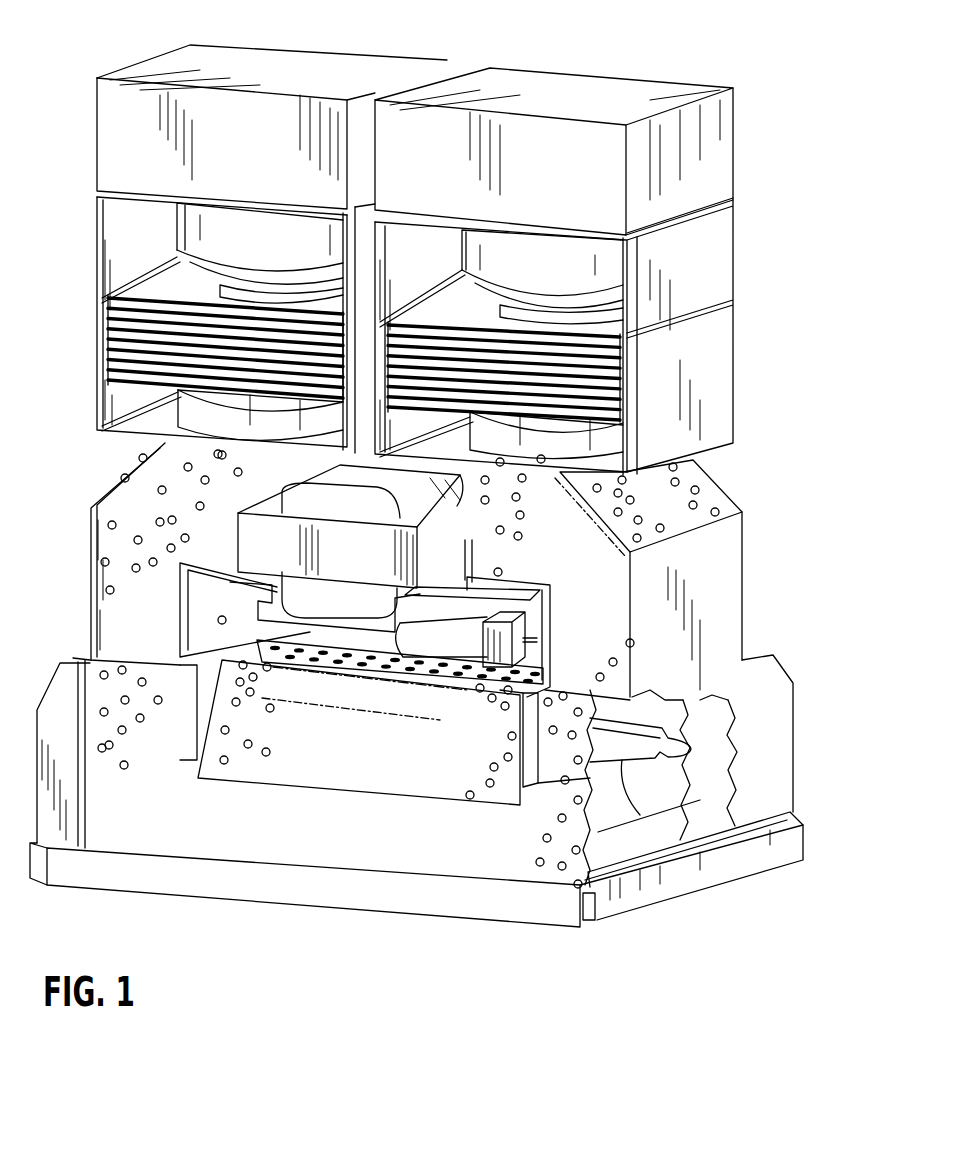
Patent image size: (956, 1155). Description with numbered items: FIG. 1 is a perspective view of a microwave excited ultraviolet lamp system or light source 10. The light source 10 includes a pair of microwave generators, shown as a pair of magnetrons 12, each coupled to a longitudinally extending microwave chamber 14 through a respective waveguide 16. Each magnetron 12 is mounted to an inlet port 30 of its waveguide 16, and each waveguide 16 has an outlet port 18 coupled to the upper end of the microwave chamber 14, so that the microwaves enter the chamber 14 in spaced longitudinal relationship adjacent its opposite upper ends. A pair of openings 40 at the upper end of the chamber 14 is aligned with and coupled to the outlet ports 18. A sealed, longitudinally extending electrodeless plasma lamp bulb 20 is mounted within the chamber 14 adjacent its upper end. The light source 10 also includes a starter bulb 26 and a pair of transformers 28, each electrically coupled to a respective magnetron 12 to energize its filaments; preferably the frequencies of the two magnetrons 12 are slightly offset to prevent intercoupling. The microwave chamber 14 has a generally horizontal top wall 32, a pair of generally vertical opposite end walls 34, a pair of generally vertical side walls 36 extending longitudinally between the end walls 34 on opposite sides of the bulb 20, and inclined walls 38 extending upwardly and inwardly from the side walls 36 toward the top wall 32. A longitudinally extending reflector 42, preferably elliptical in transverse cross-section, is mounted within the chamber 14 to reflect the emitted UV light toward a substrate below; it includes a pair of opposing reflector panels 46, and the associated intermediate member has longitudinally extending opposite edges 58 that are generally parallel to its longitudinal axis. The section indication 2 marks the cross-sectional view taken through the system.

The light source 10 is at (260, 935).
The magnetron 12 is at (285, 60).
The microwave chamber 14 is at (642, 840).
The waveguide 16 is at (122, 490).
The outlet port 18 is at (118, 675).
The plasma lamp bulb 20 is at (648, 800).
The section view direction 2 is at (740, 605).
The starter bulb 26 is at (474, 636).
The transformer 28 is at (240, 527).
The inlet port 30 is at (250, 456).
The top wall 32 is at (352, 658).
The end wall 34 is at (48, 690).
The side wall 36 is at (352, 840).
The inclined wall 38 is at (190, 722).
The opening 40 is at (162, 650).
The reflector 42 is at (268, 780).
The reflector panel 46 is at (612, 824).
The intermediate member edge 58 is at (176, 524).